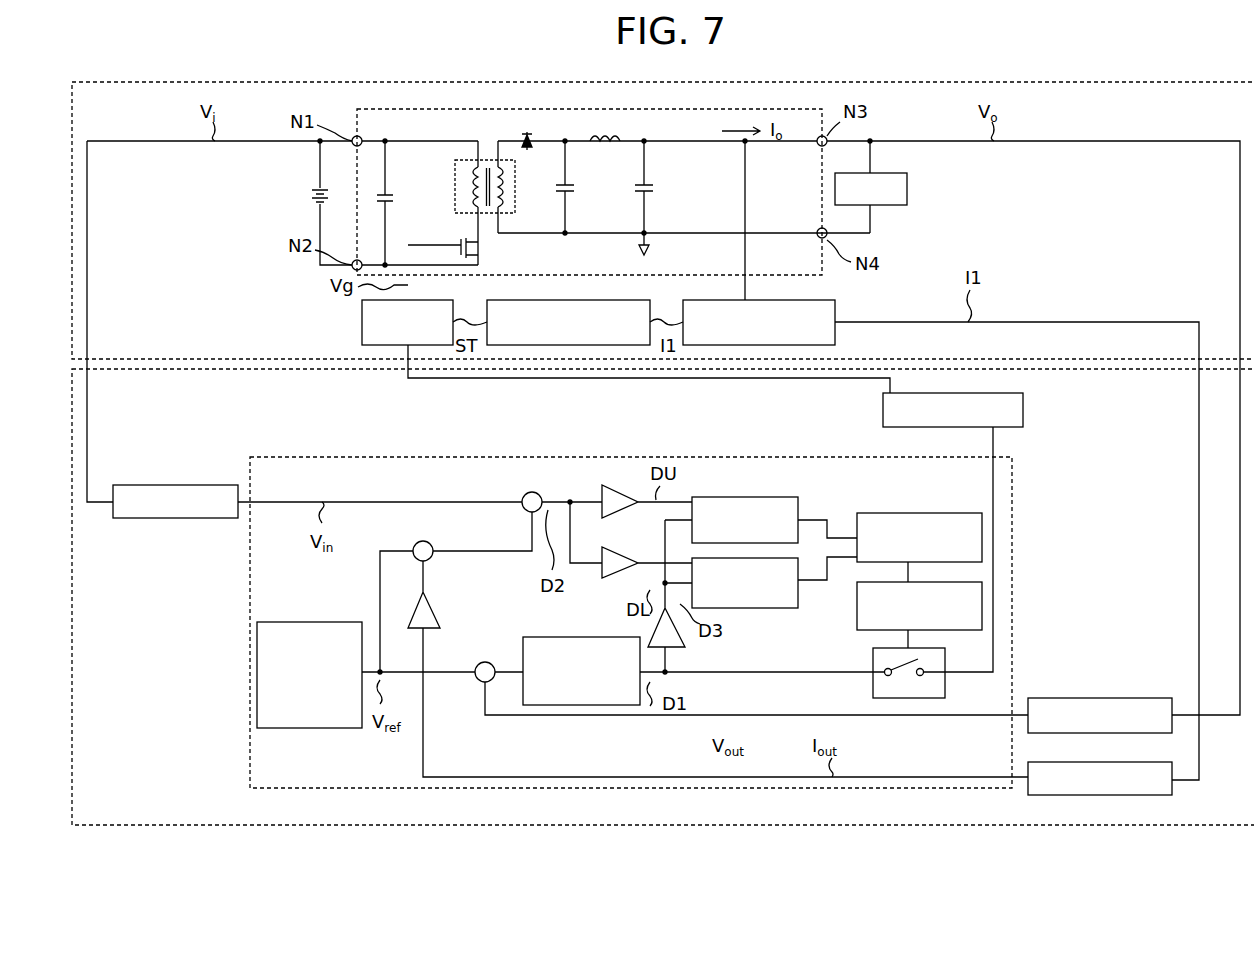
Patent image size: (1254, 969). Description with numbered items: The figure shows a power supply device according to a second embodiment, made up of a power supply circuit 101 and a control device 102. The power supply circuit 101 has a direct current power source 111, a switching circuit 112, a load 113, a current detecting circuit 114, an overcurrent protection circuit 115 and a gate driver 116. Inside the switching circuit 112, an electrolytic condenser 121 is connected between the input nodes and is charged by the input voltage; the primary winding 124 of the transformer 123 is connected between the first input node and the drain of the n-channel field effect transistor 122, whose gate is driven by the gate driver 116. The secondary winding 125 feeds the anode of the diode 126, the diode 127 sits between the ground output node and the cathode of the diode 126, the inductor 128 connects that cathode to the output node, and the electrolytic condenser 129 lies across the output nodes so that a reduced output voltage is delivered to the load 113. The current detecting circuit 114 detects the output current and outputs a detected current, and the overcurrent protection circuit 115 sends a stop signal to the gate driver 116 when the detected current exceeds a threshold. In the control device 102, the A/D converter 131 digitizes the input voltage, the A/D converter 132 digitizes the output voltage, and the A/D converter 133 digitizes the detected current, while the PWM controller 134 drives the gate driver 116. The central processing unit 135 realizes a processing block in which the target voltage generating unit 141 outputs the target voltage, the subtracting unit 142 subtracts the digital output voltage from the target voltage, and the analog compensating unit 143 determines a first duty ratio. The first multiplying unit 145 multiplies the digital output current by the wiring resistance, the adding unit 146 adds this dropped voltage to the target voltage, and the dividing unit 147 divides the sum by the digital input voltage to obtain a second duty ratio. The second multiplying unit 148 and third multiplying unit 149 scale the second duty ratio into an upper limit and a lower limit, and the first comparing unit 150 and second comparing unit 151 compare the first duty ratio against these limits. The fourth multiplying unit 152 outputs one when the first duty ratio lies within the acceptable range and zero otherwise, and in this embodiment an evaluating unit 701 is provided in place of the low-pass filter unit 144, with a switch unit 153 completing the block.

The power supply circuit 101 is at (72, 292).
The control device 102 is at (72, 500).
The direct current power source 111 is at (312, 197).
The switching circuit 112 is at (735, 109).
The load 113 is at (907, 189).
The current detecting circuit 114 is at (835, 307).
The overcurrent protection circuit 115 is at (618, 300).
The gate driver 116 is at (362, 325).
The electrolytic condenser 121 is at (388, 196).
The n-channel field effect transistor 122 is at (470, 251).
The transformer 123 is at (477, 155).
The primary winding 124 is at (476, 196).
The secondary winding 125 is at (494, 194).
The diode 126 is at (530, 136).
The diode 127 is at (574, 189).
The inductor 128 is at (618, 136).
The electrolytic condenser 129 is at (653, 189).
The A/D converter 131 is at (162, 518).
The A/D converter 132 is at (1104, 698).
The A/D converter 133 is at (1150, 795).
The PWM controller 134 is at (1023, 410).
The central processing unit 135 is at (352, 457).
The target voltage generating unit 141 is at (326, 622).
The subtracting unit 142 is at (482, 688).
The analog compensating unit 143 is at (590, 637).
The low-pass filter unit 144 is at (678, 632).
The first multiplying unit 145 is at (436, 606).
The adding unit 146 is at (428, 541).
The dividing unit 147 is at (526, 496).
The second multiplying unit 148 is at (620, 485).
The third multiplying unit 149 is at (630, 540).
The first comparing unit 150 is at (716, 497).
The second comparing unit 151 is at (760, 608).
The fourth multiplying unit 152 is at (878, 513).
The switch unit 153 is at (873, 684).
The evaluating unit 701 is at (857, 617).